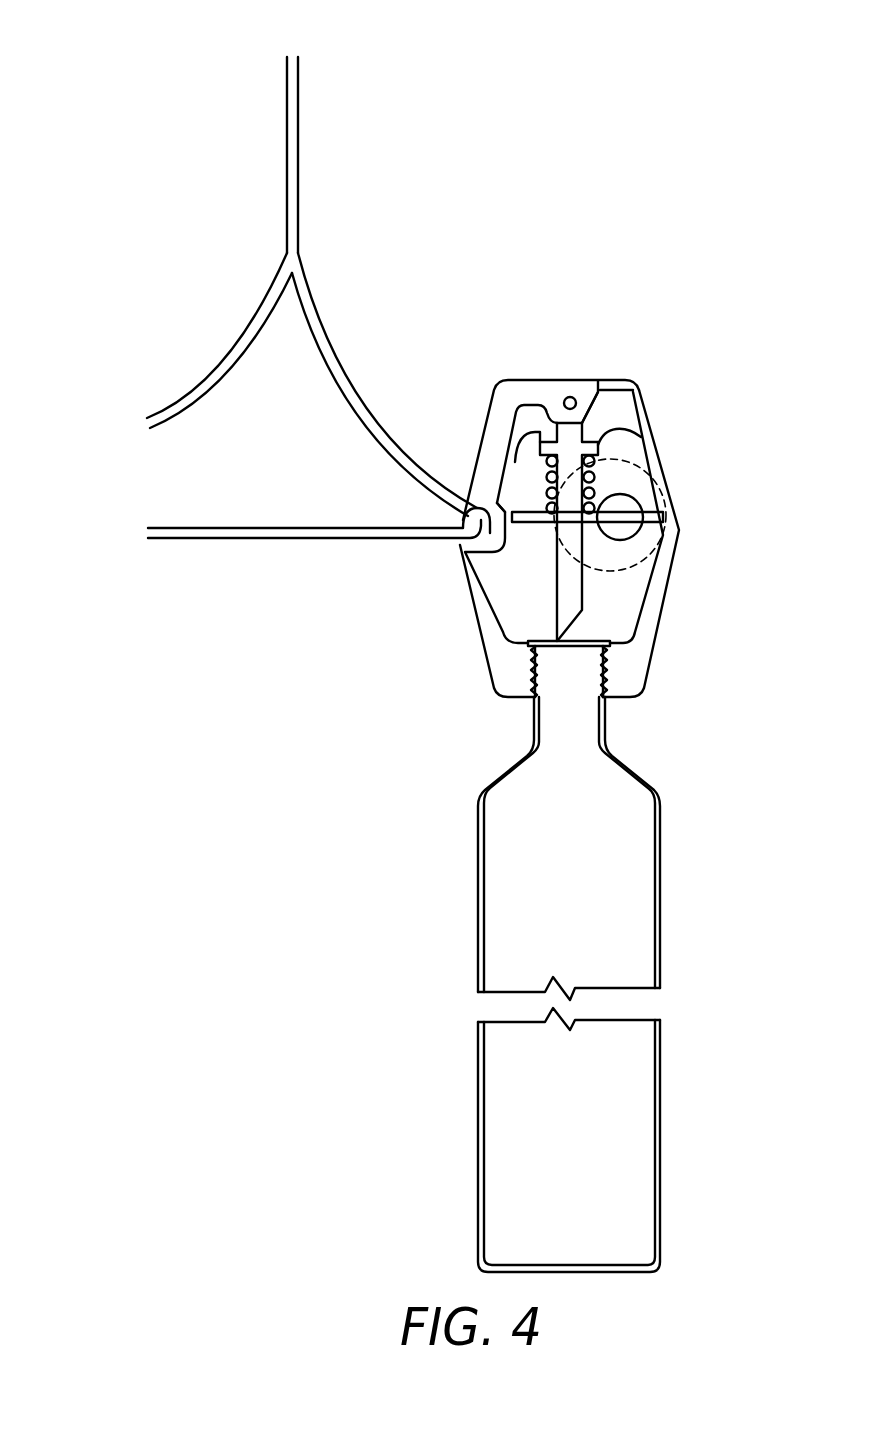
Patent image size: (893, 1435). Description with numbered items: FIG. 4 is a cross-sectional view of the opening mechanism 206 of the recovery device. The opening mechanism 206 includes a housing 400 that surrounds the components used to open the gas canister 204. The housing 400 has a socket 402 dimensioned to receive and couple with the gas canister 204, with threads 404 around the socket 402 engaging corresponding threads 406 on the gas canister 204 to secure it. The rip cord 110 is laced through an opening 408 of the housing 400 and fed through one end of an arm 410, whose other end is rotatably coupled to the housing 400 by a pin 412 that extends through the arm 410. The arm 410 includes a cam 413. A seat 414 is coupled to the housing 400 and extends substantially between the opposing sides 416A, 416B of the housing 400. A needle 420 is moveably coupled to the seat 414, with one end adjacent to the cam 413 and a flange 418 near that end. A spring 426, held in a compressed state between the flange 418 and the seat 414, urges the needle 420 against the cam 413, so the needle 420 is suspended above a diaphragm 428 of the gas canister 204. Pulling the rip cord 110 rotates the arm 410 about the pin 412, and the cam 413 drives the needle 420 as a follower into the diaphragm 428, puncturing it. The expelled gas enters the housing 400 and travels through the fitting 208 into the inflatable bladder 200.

The inflatable bladder 200 is at (108, 23).
The rip cord 110 is at (312, 306).
The opening mechanism 206 is at (690, 342).
The housing 400 is at (635, 380).
The arm 410 is at (487, 417).
The opposing side of the housing 416A is at (488, 655).
The opposing side of the housing 416B is at (677, 517).
The opening 408 is at (462, 520).
The pin 412 is at (565, 400).
The cam 413 is at (594, 388).
The flange 418 is at (587, 445).
The needle 420 is at (563, 600).
The spring 426 is at (590, 460).
The seat 414 is at (537, 523).
The fitting 208 is at (648, 488).
The socket 402 is at (575, 641).
The diaphragm 428 is at (570, 647).
The threads 404 is at (607, 655).
The corresponding threads 406 is at (610, 688).
The gas canister 204 is at (655, 833).